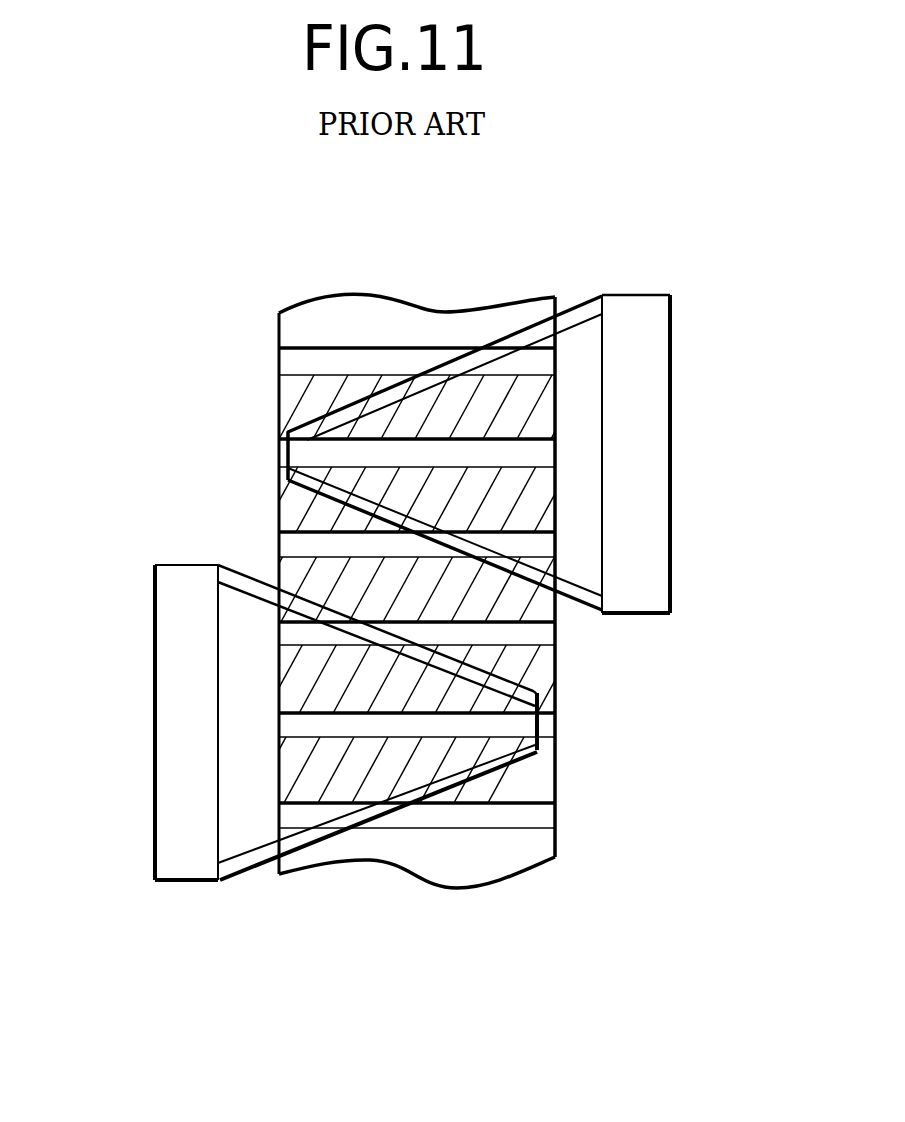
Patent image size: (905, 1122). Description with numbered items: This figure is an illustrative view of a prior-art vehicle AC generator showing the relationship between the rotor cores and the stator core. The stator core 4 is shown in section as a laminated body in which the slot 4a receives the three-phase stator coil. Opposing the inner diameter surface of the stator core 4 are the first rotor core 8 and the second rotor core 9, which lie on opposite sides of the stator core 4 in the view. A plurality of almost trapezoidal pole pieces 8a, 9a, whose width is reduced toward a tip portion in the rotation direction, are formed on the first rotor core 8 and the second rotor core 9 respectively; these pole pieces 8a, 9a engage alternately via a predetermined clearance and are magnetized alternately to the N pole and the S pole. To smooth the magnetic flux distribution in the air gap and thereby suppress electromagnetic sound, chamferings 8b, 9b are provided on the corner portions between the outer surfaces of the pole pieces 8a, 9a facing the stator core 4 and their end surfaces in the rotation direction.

The stator core 4 is at (333, 294).
The slot 4a is at (557, 722).
The first rotor core 8 is at (670, 455).
The pole piece 8a is at (575, 347).
The chamfering 8b is at (458, 360).
The second rotor core 9 is at (155, 710).
The pole piece 9a is at (252, 835).
The chamfering 9b is at (357, 813).